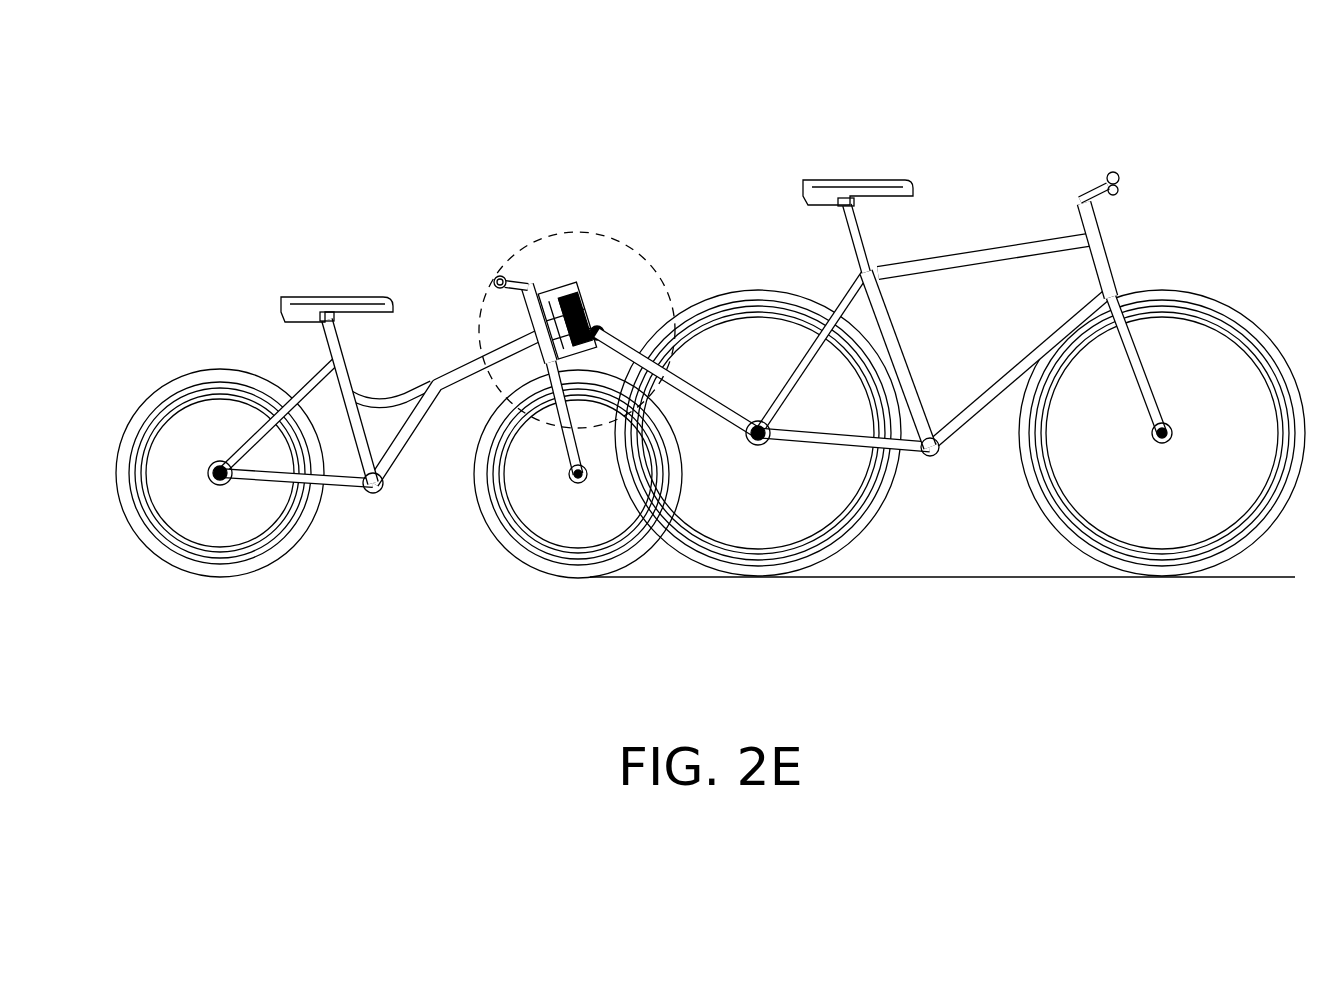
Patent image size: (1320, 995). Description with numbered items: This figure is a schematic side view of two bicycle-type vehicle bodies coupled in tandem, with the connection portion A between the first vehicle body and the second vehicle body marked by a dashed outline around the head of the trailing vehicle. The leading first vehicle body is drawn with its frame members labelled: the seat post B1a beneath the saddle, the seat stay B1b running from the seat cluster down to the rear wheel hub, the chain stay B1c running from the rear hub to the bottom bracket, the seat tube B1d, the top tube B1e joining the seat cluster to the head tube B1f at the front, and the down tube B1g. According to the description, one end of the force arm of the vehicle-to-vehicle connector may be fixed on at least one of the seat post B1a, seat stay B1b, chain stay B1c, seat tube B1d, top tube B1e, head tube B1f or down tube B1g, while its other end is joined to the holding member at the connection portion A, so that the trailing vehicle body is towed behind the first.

The connection portion A is at (578, 232).
The seat post B1a is at (862, 222).
The seat stay B1b is at (815, 342).
The chain stay B1c is at (858, 450).
The seat tube B1d is at (905, 342).
The top tube B1e is at (976, 262).
The head tube B1f is at (1108, 236).
The down tube B1g is at (937, 458).